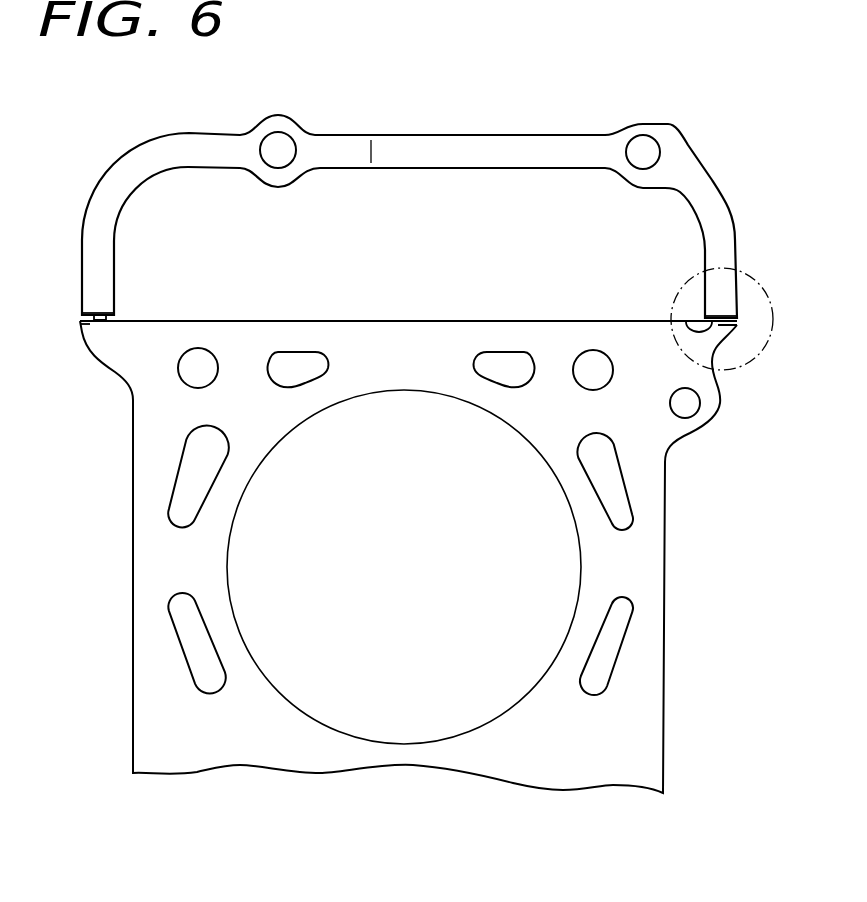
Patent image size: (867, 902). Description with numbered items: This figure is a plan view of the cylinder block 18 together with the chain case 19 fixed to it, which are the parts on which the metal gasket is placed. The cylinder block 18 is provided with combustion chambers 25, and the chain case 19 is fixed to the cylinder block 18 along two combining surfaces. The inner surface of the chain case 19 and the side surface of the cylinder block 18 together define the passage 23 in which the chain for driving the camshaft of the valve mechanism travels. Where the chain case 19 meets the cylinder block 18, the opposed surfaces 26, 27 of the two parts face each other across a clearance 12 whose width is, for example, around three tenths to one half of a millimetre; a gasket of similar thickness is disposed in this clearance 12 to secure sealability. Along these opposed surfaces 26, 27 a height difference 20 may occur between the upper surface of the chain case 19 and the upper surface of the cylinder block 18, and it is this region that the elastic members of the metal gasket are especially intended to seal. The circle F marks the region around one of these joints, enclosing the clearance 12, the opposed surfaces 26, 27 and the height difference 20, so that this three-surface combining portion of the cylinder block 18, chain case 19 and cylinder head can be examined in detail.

The chain case 19 is at (478, 152).
The passage 23 is at (371, 205).
The cylinder block 18 is at (650, 518).
The combustion chamber 25 is at (228, 555).
The opposed surface 26 is at (103, 318).
The opposed surface 27 is at (690, 322).
The clearance 12 is at (100, 315).
The height difference 20 is at (88, 322).
The detail region F is at (748, 272).